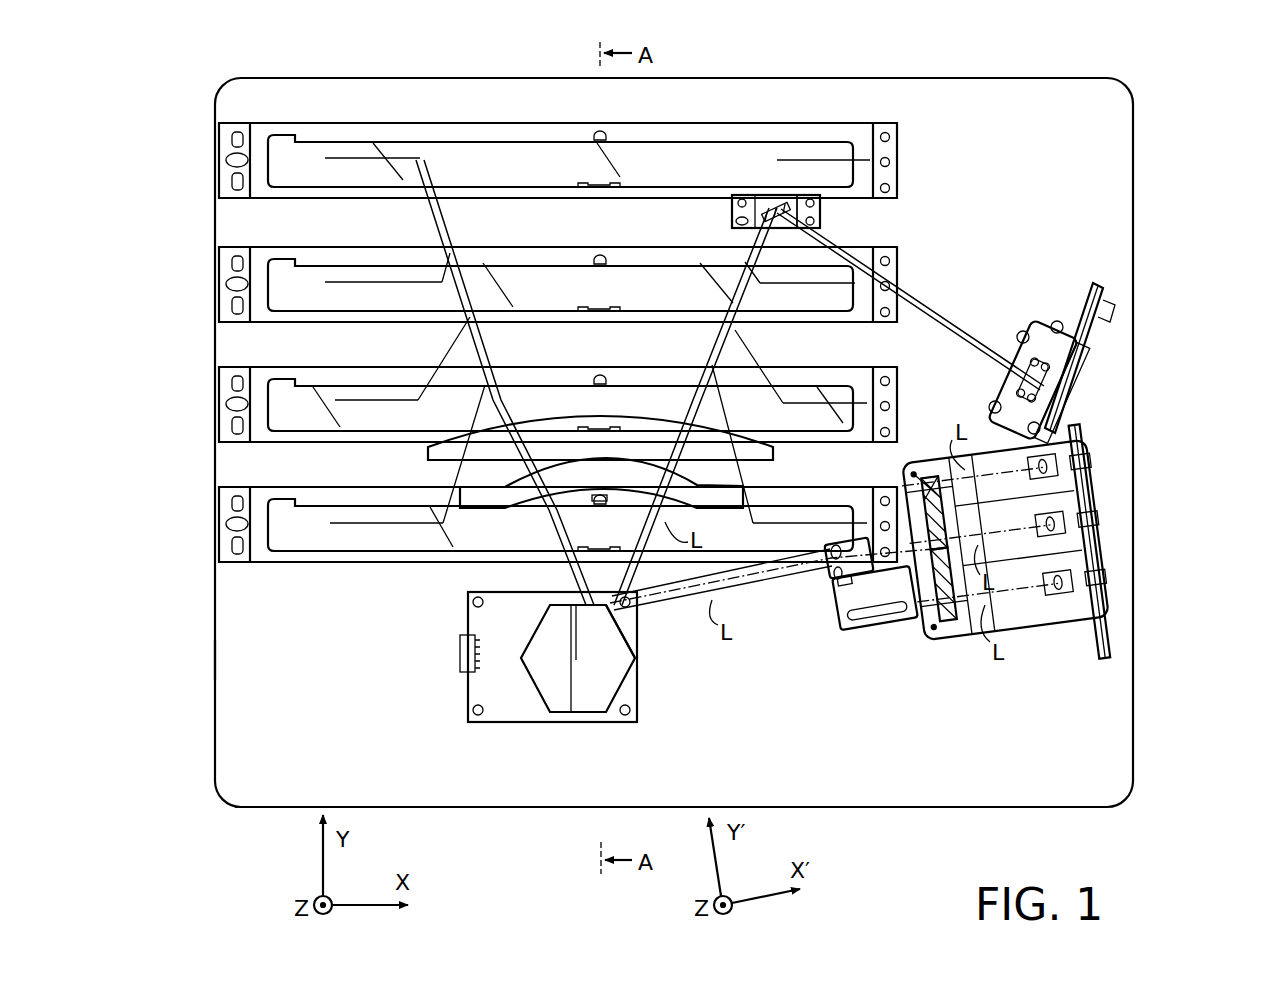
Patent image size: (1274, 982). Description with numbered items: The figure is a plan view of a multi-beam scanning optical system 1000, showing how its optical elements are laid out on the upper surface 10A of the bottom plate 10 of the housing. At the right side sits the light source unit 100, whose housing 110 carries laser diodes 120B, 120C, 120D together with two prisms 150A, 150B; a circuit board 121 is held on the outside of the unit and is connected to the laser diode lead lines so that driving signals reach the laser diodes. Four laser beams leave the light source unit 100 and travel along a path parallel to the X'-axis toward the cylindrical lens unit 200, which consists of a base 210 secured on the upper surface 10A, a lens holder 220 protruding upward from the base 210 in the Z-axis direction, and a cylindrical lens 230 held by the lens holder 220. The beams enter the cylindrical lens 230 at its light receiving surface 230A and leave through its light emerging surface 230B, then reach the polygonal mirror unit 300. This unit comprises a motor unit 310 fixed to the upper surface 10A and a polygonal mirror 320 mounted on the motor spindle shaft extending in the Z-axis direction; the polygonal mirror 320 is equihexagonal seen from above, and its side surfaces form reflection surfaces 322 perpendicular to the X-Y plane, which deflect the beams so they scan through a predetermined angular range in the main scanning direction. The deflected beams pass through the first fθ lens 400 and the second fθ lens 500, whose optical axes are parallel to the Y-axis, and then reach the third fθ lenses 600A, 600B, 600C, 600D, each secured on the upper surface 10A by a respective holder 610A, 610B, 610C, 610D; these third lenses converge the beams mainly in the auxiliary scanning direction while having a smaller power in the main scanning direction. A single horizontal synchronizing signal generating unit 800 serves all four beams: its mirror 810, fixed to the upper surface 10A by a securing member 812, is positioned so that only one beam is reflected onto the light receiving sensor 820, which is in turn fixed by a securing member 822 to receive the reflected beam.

The multi-beam scanning optical system 1000 is at (1158, 126).
The bottom plate 10 is at (212, 658).
The upper surface 10A is at (245, 713).
The light source unit 100 is at (1025, 655).
The housing 110 is at (1052, 627).
The laser diode 120B is at (1095, 580).
The laser diode 120C is at (1092, 472).
The laser diode 120D is at (1092, 521).
The circuit board 121 is at (1118, 655).
The prism 150A is at (930, 595).
The prism 150B is at (920, 477).
The cylindrical lens unit 200 is at (862, 633).
The base 210 is at (910, 620).
The lens holder 220 is at (862, 570).
The cylindrical lens 230 is at (828, 547).
The light receiving surface 230A is at (845, 595).
The light emerging surface 230B is at (833, 578).
The polygonal mirror unit 300 is at (490, 726).
The motor unit 310 is at (559, 724).
The polygonal mirror 320 is at (522, 642).
The reflection surfaces 322 is at (628, 638).
The first fθ lens 400 is at (487, 510).
The second fθ lens 500 is at (638, 410).
The third fθ lens 600A is at (458, 157).
The third fθ lens 600B is at (358, 273).
The third fθ lens 600C is at (557, 395).
The third fθ lens 600D is at (353, 512).
The holder 610A is at (757, 135).
The holder 610B is at (636, 248).
The holder 610C is at (808, 382).
The holder 610D is at (772, 493).
The horizontal synchronizing signal generating unit 800 is at (1018, 306).
The mirror 810 is at (776, 204).
The securing member 812 is at (818, 212).
The light receiving sensor 820 is at (1068, 380).
The securing member 822 is at (1087, 307).